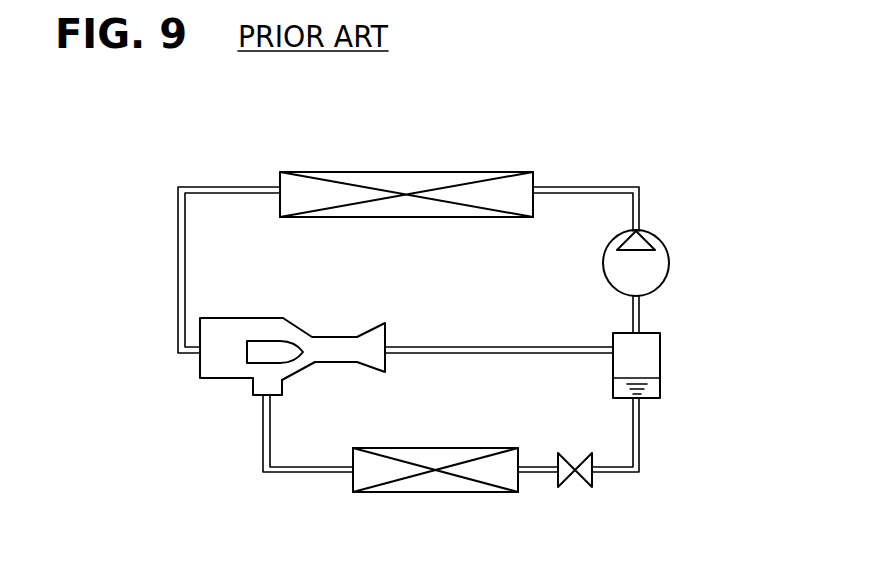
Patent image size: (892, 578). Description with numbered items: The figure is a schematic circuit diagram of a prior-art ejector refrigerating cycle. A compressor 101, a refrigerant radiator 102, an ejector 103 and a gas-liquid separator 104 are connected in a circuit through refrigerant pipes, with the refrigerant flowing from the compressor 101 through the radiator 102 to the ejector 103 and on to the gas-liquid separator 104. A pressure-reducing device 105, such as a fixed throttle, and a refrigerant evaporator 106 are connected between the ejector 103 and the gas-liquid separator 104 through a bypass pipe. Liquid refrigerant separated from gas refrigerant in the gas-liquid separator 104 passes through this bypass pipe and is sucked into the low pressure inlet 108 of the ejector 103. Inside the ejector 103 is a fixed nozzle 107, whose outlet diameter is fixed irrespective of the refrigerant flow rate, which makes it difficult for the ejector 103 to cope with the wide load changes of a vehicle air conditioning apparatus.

The compressor 101 is at (665, 270).
The refrigerant radiator 102 is at (463, 172).
The ejector 103 is at (225, 395).
The gas-liquid separator 104 is at (650, 358).
The pressure-reducing device 105 is at (583, 472).
The refrigerant evaporator 106 is at (435, 492).
The nozzle 107 is at (250, 350).
The low pressure inlet 108 is at (258, 397).